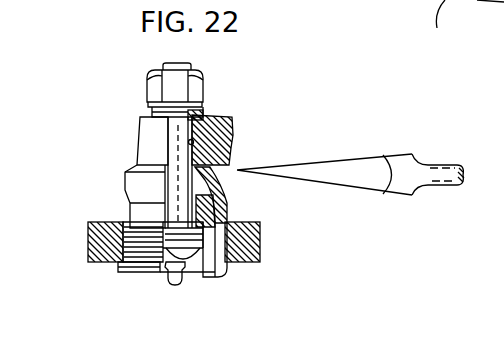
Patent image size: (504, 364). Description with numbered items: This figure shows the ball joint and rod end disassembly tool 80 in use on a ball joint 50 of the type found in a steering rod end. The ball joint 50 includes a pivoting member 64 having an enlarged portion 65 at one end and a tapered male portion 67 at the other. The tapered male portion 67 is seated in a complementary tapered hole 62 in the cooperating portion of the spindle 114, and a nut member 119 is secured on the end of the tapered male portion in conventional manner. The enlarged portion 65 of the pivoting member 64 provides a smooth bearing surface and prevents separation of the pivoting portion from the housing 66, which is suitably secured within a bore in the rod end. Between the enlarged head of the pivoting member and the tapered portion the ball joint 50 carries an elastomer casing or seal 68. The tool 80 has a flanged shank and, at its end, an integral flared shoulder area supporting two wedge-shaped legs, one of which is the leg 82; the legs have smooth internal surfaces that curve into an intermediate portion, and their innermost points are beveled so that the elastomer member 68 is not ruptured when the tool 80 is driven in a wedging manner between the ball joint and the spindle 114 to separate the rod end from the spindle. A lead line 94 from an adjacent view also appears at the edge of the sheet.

The ball joint 50 is at (94, 205).
The tapered hole 62 is at (192, 143).
The pivoting member 64 is at (177, 182).
The enlarged portion 65 is at (189, 250).
The housing 66 is at (230, 218).
The tapered male portion 67 is at (177, 140).
The elastomer casing or seal 68 is at (148, 170).
The ball joint and rod end disassembly tool 80 is at (358, 200).
The wedge-shaped leg 82 is at (263, 168).
The lead 94 is at (469, 25).
The spindle 114 is at (232, 133).
The nut member 119 is at (153, 82).